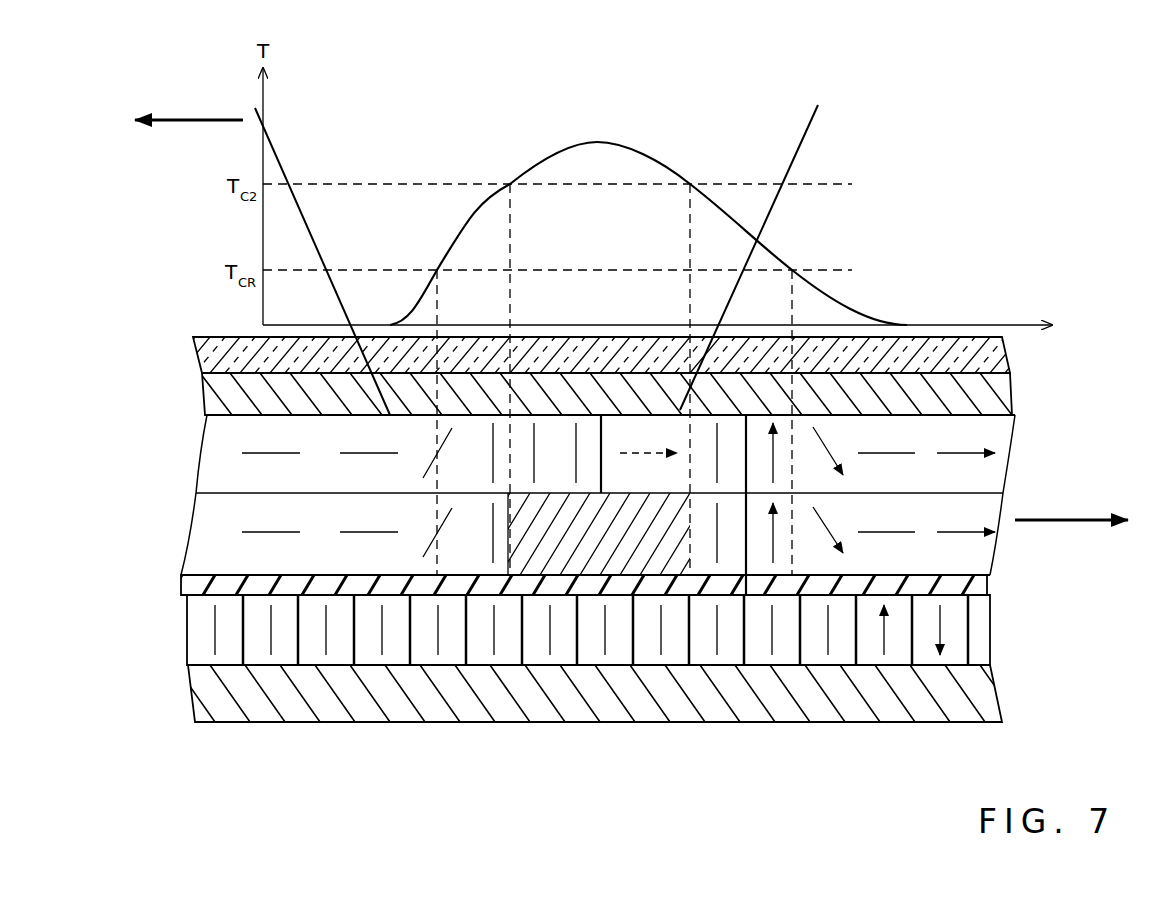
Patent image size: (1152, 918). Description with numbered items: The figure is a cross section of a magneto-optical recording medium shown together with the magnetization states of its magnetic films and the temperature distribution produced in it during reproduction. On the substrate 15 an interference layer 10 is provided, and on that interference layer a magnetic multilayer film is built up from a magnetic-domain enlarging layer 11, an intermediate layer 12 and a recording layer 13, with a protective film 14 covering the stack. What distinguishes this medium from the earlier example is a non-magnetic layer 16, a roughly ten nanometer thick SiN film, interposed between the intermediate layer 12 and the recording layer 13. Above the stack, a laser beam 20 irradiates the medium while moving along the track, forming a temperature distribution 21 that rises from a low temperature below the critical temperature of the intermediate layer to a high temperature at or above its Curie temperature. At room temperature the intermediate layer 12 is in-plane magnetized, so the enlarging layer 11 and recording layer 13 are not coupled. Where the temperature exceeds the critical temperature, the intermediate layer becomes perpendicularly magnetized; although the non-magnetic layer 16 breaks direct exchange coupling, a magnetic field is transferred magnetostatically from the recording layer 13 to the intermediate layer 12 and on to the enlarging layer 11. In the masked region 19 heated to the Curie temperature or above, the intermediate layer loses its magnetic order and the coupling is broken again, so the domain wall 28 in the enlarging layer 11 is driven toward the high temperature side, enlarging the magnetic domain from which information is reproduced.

The interference layer 10 is at (215, 405).
The magnetic-domain enlarging layer 11 is at (215, 460).
The intermediate layer 12 is at (205, 537).
The recording layer 13 is at (200, 637).
The protective film 14 is at (205, 707).
The substrate 15 is at (205, 362).
The non-magnetic layer 16 is at (185, 585).
The masked region 19 is at (638, 563).
The laser beam 20 is at (773, 145).
The temperature distribution 21 is at (604, 140).
The domain wall 28 is at (593, 482).